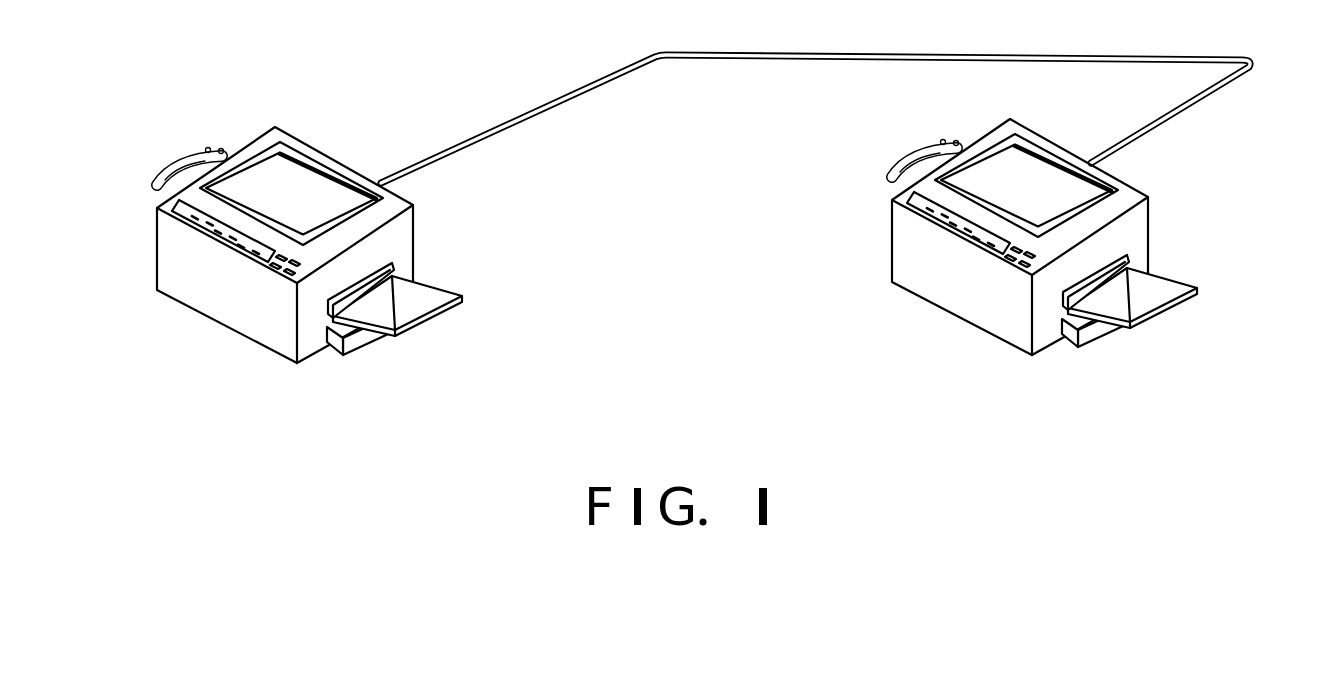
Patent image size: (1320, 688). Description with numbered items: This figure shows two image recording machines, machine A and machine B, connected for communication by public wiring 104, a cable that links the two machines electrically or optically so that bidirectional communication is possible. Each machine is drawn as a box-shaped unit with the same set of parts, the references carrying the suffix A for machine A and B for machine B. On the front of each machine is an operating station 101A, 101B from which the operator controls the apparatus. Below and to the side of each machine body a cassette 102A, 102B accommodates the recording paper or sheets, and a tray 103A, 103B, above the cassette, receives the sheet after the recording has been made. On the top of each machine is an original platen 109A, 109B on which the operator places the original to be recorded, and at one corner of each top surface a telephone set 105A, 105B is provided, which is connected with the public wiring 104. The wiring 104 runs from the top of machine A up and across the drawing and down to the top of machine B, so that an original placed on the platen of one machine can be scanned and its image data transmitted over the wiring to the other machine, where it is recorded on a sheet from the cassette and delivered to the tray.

The operating station 101A is at (277, 263).
The cassette 102A is at (338, 352).
The tray 103A is at (427, 302).
The public wiring 104 is at (520, 112).
The telephone set 105A is at (193, 155).
The original platen 109A is at (318, 210).
The operating station 101B is at (1013, 260).
The cassette 102B is at (1077, 342).
The tray 103B is at (1153, 290).
The telephone set 105B is at (921, 158).
The original platen 109B is at (978, 188).